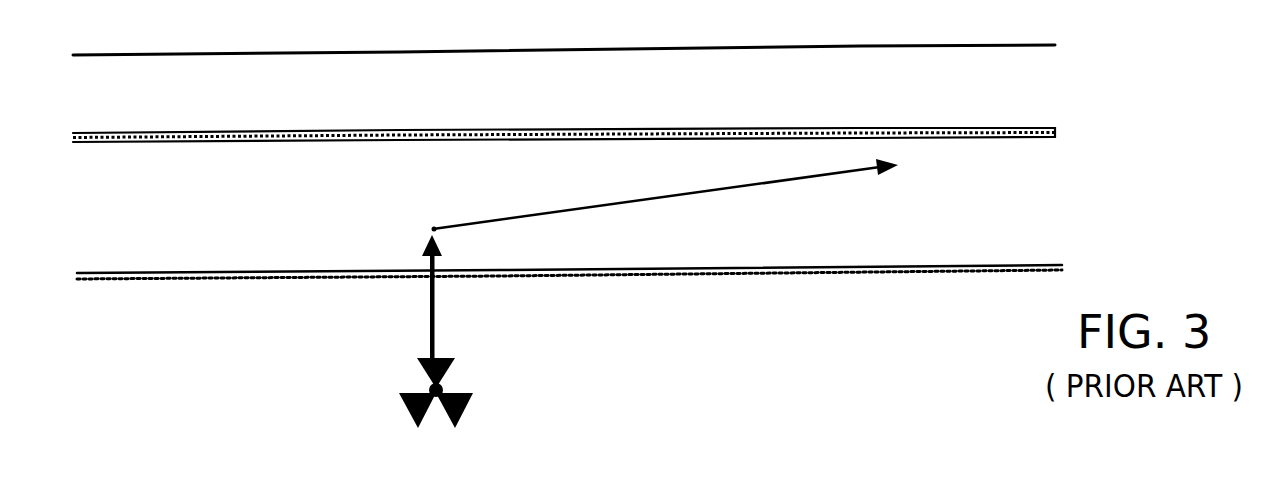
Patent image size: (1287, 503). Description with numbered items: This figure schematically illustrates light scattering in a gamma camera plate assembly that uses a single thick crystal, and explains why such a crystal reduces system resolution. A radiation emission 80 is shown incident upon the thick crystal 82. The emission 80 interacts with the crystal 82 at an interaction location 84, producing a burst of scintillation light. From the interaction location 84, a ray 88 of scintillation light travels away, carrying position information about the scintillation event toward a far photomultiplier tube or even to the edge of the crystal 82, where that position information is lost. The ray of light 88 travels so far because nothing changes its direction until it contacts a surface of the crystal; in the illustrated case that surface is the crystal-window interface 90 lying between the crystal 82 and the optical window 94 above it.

The radiation emission 80 is at (422, 385).
The thick crystal 82 is at (1027, 210).
The interaction location 84 is at (427, 220).
The ray of scintillation light 88 is at (665, 197).
The crystal-window interface 90 is at (1043, 135).
The optical window 94 is at (1028, 90).